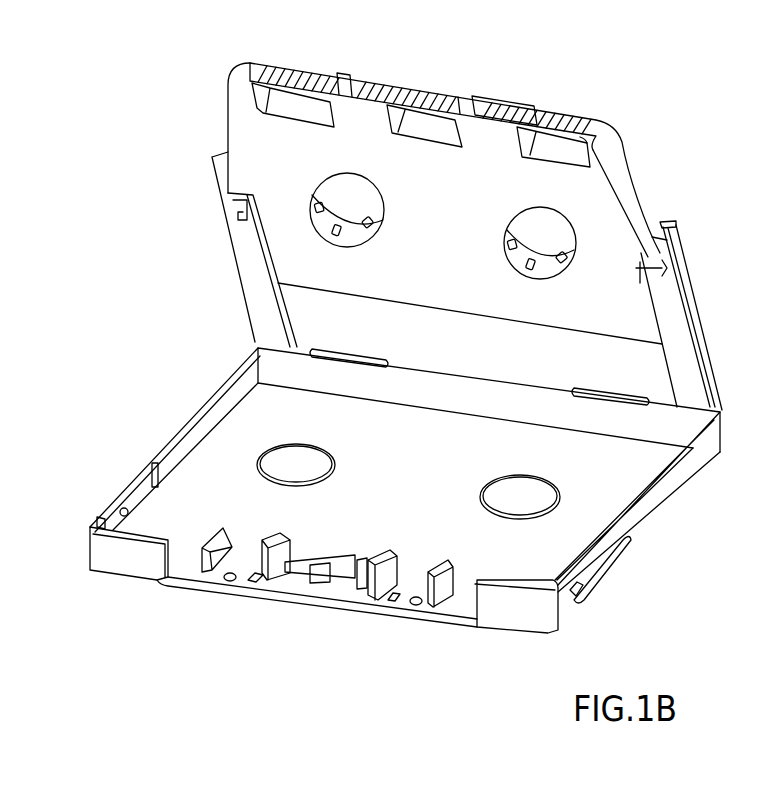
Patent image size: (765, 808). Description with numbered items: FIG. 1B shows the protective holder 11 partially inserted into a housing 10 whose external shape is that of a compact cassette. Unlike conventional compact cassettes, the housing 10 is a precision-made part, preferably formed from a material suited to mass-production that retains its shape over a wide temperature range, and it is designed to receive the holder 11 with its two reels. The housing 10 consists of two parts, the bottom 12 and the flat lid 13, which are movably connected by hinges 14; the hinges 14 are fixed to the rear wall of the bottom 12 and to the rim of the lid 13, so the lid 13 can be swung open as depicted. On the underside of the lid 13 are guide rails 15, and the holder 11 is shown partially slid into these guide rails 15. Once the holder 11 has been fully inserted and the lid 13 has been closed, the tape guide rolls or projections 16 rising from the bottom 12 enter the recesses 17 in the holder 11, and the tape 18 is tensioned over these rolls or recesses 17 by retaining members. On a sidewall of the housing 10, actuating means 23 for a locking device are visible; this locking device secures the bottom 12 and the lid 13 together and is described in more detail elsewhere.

The housing 10 is at (724, 419).
The protective holder 11 is at (643, 168).
The bottom 12 is at (653, 510).
The lid 13 is at (700, 320).
The hinges 14 is at (318, 354).
The guide rails 15 is at (247, 247).
The tape guide rolls or projections 16 is at (270, 540).
The recesses 17 is at (260, 92).
The tape 18 is at (438, 103).
The actuating means 23 is at (600, 562).